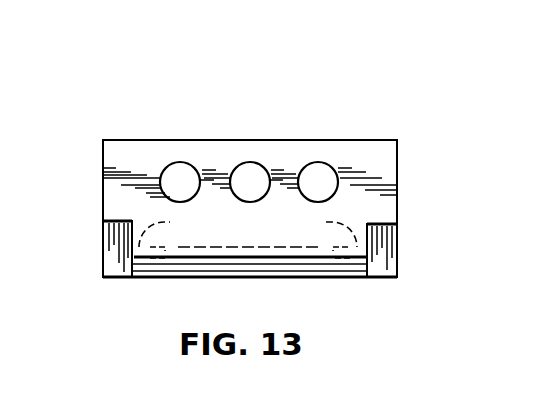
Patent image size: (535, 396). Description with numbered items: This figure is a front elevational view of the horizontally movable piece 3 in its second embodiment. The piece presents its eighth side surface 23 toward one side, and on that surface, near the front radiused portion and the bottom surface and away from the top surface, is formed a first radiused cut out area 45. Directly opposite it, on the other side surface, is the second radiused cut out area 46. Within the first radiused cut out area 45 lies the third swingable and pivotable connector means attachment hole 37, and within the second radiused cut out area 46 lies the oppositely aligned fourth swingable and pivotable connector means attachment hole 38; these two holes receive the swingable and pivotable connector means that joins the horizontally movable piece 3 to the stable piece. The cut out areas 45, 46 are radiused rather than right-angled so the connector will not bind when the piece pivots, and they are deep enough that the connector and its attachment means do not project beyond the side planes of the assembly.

The horizontally movable piece 3 is at (301, 100).
The eighth side surface 23 is at (92, 203).
The third swingable and pivotable connector means attachment hole 37 is at (171, 235).
The fourth swingable and pivotable connector means attachment hole 38 is at (325, 238).
The first radiused cut out area 45 is at (110, 262).
The second radiused cut out area 46 is at (387, 263).